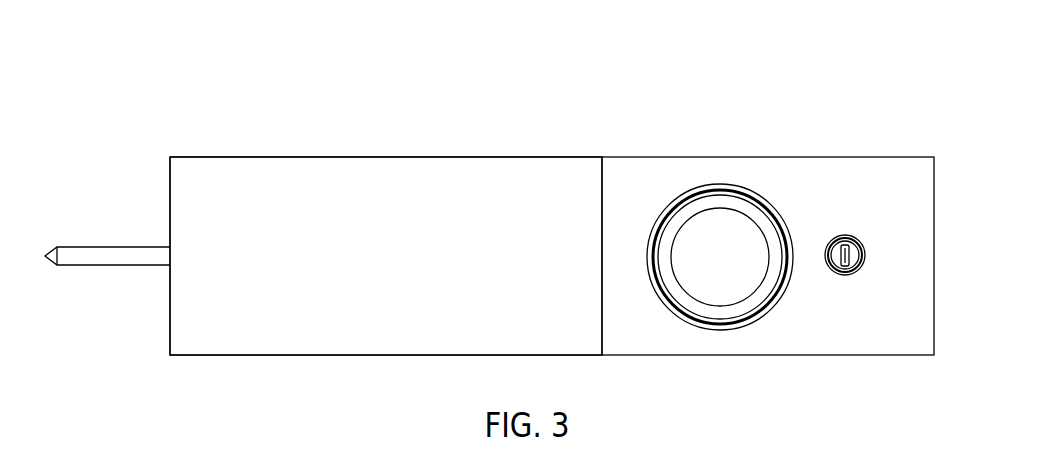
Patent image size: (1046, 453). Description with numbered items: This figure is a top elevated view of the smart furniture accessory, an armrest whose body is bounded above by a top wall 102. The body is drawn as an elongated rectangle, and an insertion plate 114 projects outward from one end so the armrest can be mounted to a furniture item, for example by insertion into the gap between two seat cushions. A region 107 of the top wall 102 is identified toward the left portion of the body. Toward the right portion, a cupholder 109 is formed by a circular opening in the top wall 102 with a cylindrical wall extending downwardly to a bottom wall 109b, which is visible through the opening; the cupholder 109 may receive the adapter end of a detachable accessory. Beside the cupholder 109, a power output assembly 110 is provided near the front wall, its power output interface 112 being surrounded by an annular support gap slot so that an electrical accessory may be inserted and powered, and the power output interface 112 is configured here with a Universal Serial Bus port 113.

The top wall 102 is at (895, 188).
The handle portion 107 is at (448, 177).
The cupholder 109 is at (721, 195).
The bottom wall 109b is at (760, 273).
The power output assembly 110 is at (844, 272).
The power output interface 112 is at (862, 247).
The Universal Serial Bus (USB) port 113 is at (846, 237).
The insertion plate 114 is at (118, 256).